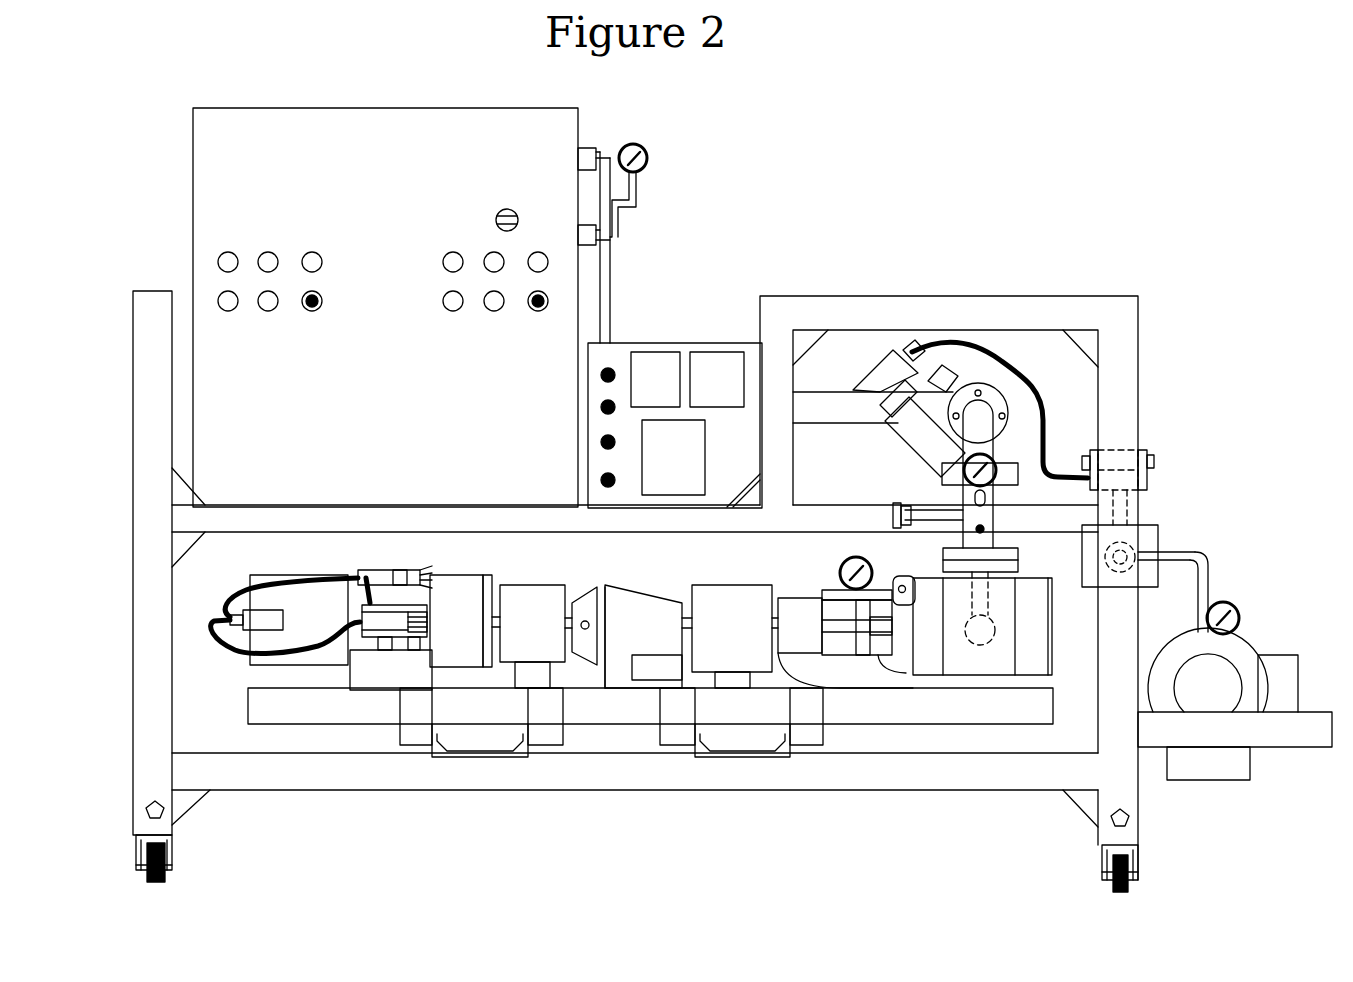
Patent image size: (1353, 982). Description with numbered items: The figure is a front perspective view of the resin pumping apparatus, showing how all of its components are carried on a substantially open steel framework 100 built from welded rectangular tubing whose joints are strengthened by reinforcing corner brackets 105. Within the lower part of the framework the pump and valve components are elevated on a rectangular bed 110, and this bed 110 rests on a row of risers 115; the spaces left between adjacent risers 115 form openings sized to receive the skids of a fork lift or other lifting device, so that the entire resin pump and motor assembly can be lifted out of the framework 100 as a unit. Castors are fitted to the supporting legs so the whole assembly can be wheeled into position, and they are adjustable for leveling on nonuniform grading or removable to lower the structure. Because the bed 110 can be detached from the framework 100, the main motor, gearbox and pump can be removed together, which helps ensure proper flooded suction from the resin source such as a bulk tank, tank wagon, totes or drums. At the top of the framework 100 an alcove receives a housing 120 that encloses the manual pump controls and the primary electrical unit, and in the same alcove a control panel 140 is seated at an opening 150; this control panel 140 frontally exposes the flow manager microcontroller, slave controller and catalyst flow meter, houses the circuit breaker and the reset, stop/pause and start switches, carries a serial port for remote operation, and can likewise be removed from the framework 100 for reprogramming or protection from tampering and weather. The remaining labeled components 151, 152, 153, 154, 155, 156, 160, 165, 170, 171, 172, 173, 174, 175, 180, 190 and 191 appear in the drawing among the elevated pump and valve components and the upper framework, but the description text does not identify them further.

The steel framework 100 is at (925, 312).
The reinforcing corner brackets 105 is at (1087, 345).
The rectangular bed 110 is at (330, 703).
The risers 115 is at (545, 718).
The housing 120 is at (305, 179).
The control panel 140 is at (603, 458).
The opening 150 is at (703, 312).
The motor 151 is at (490, 578).
The pressure gauge 152 is at (840, 572).
The pressure gauge 153 is at (960, 465).
The fitting 154 is at (880, 517).
The flange 155 is at (1000, 545).
The valve 156 is at (915, 443).
The pump 160 is at (993, 660).
The hose and flange 165 is at (950, 378).
The valve block 170 is at (890, 370).
The blower 171 is at (1237, 650).
The pressure gauge 172 is at (1223, 598).
The manifold block 173 is at (1150, 540).
The fitting 174 is at (1130, 483).
The nut 175 is at (1127, 462).
The shelf 180 is at (835, 405).
The fitting 190 is at (582, 157).
The pressure gauge 191 is at (645, 150).